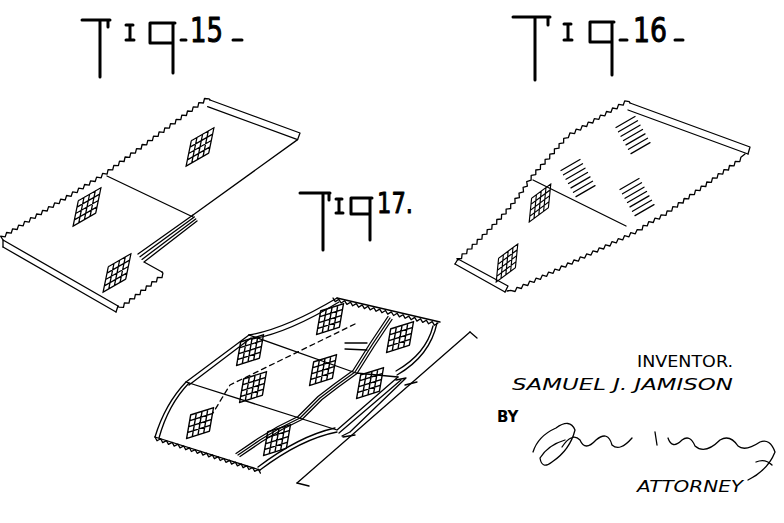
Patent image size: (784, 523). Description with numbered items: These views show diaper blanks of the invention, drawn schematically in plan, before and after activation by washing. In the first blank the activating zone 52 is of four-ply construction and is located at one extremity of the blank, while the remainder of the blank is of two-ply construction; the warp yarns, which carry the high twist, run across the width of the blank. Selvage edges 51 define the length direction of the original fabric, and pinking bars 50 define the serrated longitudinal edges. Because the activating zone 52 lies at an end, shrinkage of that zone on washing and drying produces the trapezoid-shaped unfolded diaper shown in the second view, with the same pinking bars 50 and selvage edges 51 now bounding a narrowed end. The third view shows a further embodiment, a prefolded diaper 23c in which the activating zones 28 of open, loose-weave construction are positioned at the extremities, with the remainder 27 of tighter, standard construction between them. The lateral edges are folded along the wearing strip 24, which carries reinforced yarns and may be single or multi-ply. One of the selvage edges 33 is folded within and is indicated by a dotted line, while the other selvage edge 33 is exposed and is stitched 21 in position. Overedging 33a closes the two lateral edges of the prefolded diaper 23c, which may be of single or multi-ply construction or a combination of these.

In FIG. 15, the pinking bars 50 is at (153, 133).
In FIG. 16, the pinking bars 50 is at (573, 140).
In FIG. 15, the selvage edges 51 is at (270, 124).
In FIG. 16, the selvage edges 51 is at (684, 124).
In FIG. 15, the activating zone 52 is at (150, 209).
In FIG. 16, the activating zone 52 is at (545, 237).
In FIG. 17, the wearing strip 24 is at (296, 321).
In FIG. 17, the overedging 33a is at (413, 322).
In FIG. 17, the prefolded diaper 23c is at (230, 365).
In FIG. 17, the selvage edges 33 is at (271, 363).
In FIG. 17, the stitching 21 is at (320, 412).
In FIG. 17, the activating zone 28 is at (387, 409).
In FIG. 17, the remainder of the diaper blank 27 is at (419, 425).